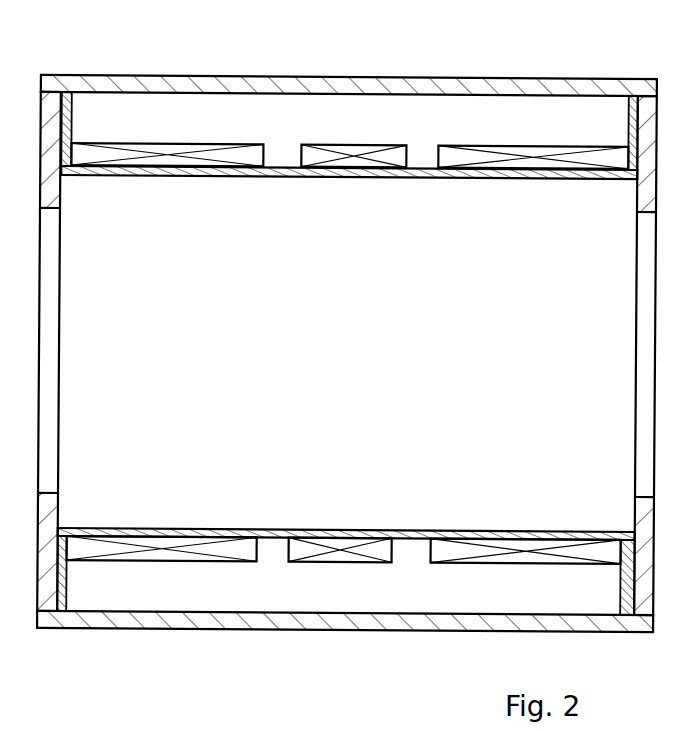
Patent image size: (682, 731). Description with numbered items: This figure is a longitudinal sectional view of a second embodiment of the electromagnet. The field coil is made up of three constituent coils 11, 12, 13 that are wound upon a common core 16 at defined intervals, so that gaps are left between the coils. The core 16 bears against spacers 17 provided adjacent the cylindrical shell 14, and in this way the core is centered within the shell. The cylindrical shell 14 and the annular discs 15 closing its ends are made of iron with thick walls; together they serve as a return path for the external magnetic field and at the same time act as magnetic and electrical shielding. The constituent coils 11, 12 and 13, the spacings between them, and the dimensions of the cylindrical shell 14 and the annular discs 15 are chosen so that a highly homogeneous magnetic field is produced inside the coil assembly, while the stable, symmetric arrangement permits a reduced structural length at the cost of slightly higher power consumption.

The constituent coil 11 is at (170, 155).
The constituent coil 12 is at (352, 156).
The constituent coil 13 is at (541, 153).
The cylindrical shell 14 is at (492, 85).
The annular disc 15 is at (43, 110).
The core 16 is at (368, 177).
The spacer 17 is at (66, 178).